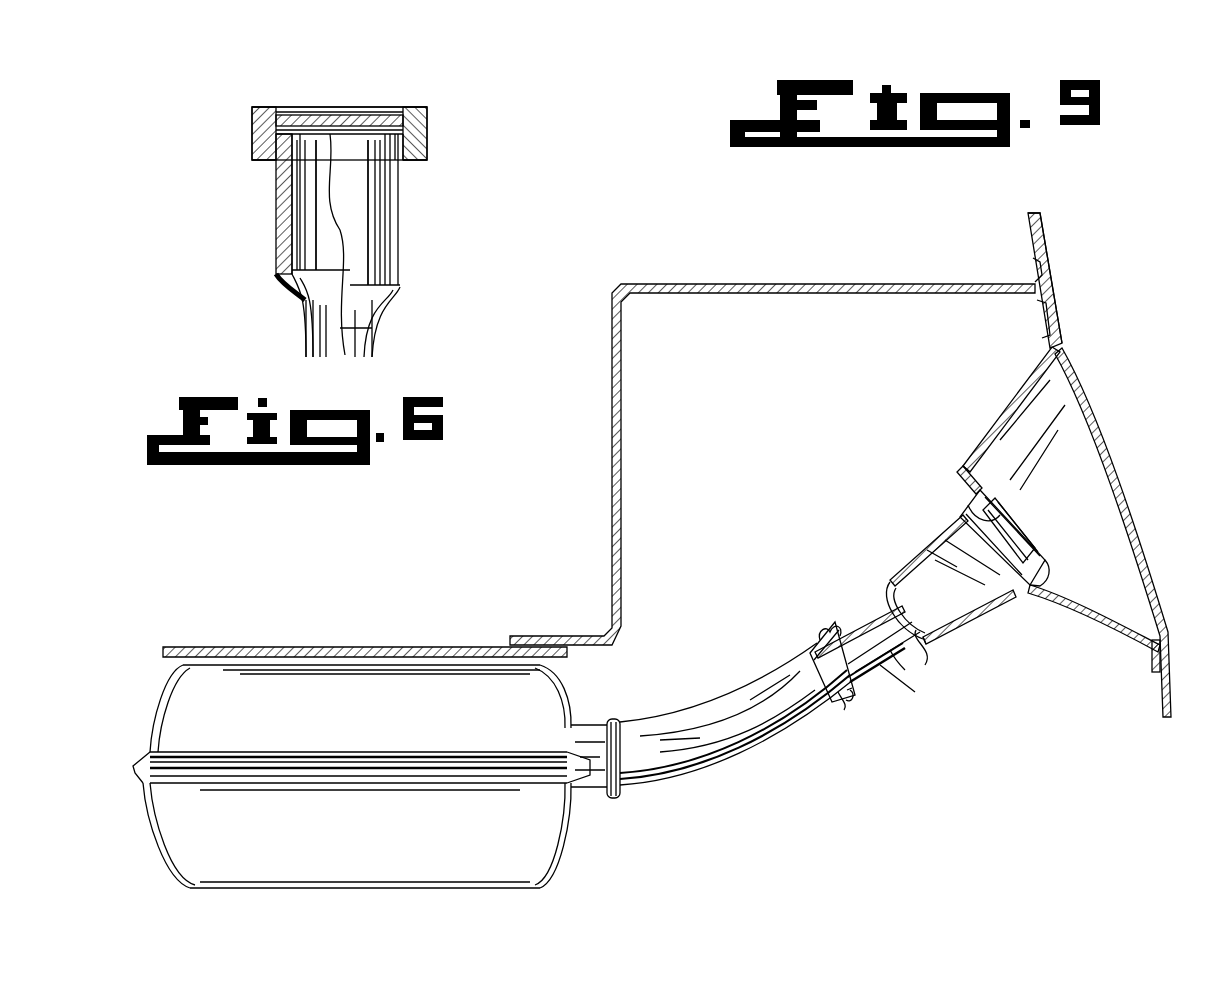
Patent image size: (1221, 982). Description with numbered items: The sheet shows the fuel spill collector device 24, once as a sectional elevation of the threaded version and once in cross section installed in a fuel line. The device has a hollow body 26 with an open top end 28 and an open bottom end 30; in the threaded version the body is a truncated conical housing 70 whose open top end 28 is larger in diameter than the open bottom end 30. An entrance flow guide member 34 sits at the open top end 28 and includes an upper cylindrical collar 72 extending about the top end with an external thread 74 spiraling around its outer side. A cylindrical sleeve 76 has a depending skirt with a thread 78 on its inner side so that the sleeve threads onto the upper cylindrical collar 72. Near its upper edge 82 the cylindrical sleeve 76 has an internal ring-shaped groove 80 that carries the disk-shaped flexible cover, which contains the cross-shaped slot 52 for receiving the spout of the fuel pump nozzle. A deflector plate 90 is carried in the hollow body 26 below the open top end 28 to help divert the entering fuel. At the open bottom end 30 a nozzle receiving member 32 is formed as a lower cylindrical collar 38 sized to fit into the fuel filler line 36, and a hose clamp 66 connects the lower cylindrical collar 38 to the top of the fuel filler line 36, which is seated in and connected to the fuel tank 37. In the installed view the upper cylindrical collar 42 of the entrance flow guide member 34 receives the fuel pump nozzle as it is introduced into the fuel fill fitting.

In FIG. 6, the fuel spill collector device 24 is at (276, 242).
In FIG. 9, the fuel spill collector device 24 is at (1000, 645).
In FIG. 6, the hollow body 26 is at (406, 260).
In FIG. 9, the hollow body 26 is at (958, 642).
In FIG. 6, the open top end 28 is at (322, 132).
In FIG. 9, the open top end 28 is at (922, 540).
In FIG. 6, the open bottom end 30 is at (300, 295).
In FIG. 9, the open bottom end 30 is at (905, 652).
In FIG. 6, the nozzle receiving member 32 is at (302, 334).
In FIG. 9, the nozzle receiving member 32 is at (843, 615).
In FIG. 6, the entrance flow guide member 34 is at (252, 153).
In FIG. 9, the entrance flow guide member 34 is at (950, 515).
In FIG. 9, the fuel filler line 36 is at (736, 725).
In FIG. 9, the fuel tank 37 is at (537, 878).
In FIG. 6, the lower cylindrical collar 38 is at (372, 335).
In FIG. 9, the lower cylindrical collar 38 is at (885, 670).
In FIG. 9, the upper cylindrical collar 42 is at (1025, 590).
In FIG. 6, the cross-shaped slot 52 is at (342, 112).
In FIG. 9, the hose clamp 66 is at (805, 718).
In FIG. 6, the truncated conical housing 70 is at (276, 272).
In FIG. 6, the upper cylindrical collar 72 is at (305, 132).
In FIG. 6, the external thread 74 is at (428, 150).
In FIG. 6, the cylindrical sleeve 76 is at (428, 120).
In FIG. 6, the thread 78 is at (252, 133).
In FIG. 6, the internal ring-shaped groove 80 is at (408, 109).
In FIG. 6, the upper edge 82 is at (356, 112).
In FIG. 6, the deflector plate 90 is at (360, 200).